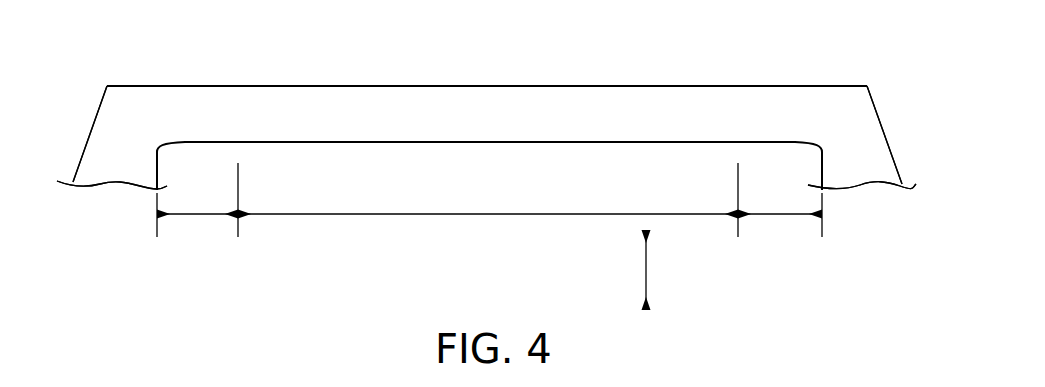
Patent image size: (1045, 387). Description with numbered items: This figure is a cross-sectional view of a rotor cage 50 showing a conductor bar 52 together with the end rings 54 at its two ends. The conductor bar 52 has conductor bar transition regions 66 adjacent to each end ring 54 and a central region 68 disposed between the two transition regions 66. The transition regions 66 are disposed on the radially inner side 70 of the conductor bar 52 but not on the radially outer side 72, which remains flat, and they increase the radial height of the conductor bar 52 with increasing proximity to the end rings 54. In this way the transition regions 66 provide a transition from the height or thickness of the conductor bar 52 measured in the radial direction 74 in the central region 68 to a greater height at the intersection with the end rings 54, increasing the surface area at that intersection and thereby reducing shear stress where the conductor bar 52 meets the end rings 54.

The rotor cage 50 is at (841, 43).
The conductor bar 52 is at (507, 127).
The end ring 54 is at (132, 166).
The conductor bar transition region 66 is at (200, 212).
The central region 68 is at (501, 212).
The radially inner side 70 is at (507, 41).
The radially outer side 72 is at (507, 316).
The radial direction 74 is at (645, 263).